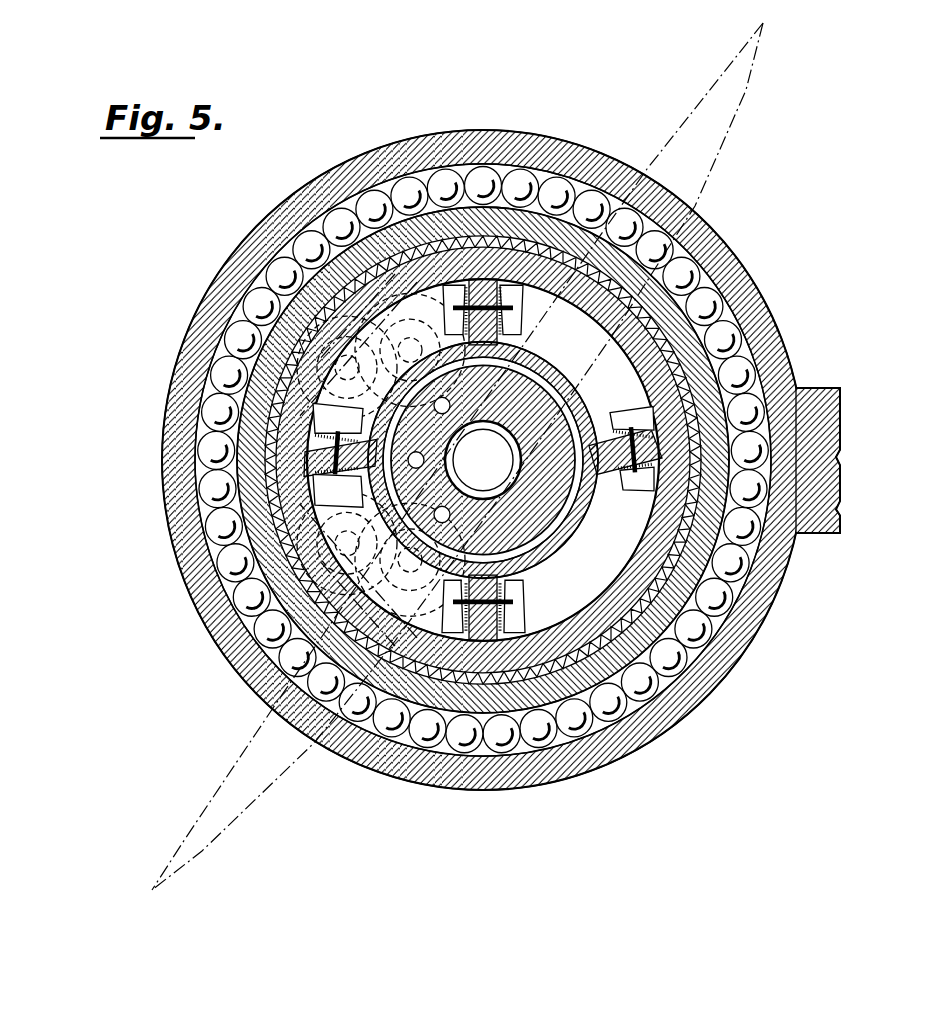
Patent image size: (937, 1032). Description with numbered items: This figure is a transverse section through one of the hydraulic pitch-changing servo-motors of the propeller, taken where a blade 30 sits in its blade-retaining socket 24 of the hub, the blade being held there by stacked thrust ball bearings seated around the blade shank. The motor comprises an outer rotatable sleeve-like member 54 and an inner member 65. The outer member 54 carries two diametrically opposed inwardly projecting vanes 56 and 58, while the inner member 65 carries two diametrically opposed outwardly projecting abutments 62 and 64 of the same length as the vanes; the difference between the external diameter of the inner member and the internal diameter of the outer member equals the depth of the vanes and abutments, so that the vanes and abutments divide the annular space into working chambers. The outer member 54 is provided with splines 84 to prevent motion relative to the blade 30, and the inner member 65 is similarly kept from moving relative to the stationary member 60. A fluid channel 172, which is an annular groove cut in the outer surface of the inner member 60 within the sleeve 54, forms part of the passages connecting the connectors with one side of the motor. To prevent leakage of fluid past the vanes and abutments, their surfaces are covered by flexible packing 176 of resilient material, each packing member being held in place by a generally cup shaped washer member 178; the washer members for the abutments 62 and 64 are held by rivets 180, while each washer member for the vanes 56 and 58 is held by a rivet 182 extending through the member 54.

The blade-retaining socket 24 is at (688, 707).
The blade 30 is at (440, 697).
The outer rotatable sleeve-like member 54 is at (212, 598).
The vane 56 is at (613, 428).
The vane 58 is at (366, 397).
The stationary member 60 is at (590, 505).
The abutment 62 is at (446, 296).
The abutment 64 is at (510, 630).
The inner member 65 is at (588, 392).
The splines 84 is at (456, 250).
The fluid channel 172 is at (545, 387).
The flexible packing 176 is at (566, 547).
The cup shaped washer member 178 is at (522, 580).
The rivets 180 is at (445, 604).
The rivet 182 is at (330, 478).